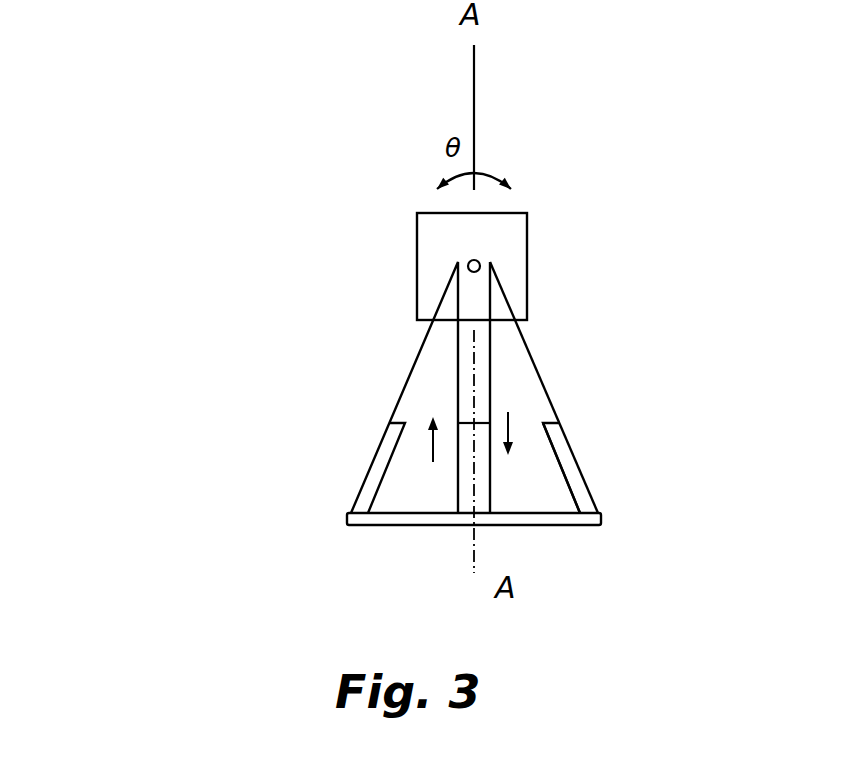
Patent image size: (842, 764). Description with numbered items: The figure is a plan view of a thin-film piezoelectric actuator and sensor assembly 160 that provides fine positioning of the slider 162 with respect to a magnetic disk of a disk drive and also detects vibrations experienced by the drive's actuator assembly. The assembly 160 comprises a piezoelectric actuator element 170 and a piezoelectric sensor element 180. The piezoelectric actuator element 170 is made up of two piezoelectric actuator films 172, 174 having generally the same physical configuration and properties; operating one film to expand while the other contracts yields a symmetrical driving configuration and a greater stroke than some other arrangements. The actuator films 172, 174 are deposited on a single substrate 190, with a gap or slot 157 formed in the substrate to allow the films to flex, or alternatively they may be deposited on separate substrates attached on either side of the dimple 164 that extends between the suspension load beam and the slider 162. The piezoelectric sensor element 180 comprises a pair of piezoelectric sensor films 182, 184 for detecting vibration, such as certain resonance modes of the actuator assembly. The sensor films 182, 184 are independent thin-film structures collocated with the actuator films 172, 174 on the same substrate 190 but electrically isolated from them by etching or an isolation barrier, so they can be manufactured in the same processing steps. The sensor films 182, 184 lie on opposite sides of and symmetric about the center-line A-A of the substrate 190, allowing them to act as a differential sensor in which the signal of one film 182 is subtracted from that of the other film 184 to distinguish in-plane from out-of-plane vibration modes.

The gap or slot 157 is at (467, 328).
The piezoelectric actuator and sensor assembly 160 is at (297, 332).
The slider 162 is at (527, 248).
The dimple 164 is at (468, 261).
The piezoelectric actuator element 170 is at (535, 346).
The piezoelectric actuator film 172 is at (430, 375).
The piezoelectric actuator film 174 is at (532, 395).
The piezoelectric sensor element 180 is at (580, 453).
The piezoelectric sensor film 182 is at (377, 472).
The piezoelectric sensor film 184 is at (578, 482).
The substrate 190 is at (483, 498).